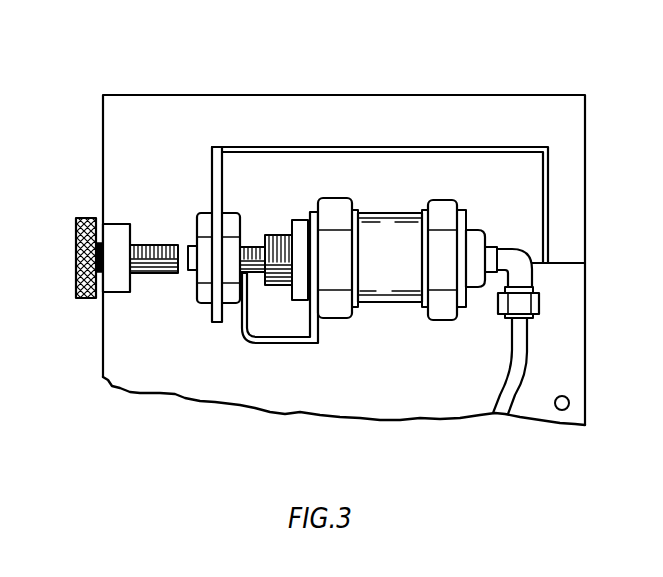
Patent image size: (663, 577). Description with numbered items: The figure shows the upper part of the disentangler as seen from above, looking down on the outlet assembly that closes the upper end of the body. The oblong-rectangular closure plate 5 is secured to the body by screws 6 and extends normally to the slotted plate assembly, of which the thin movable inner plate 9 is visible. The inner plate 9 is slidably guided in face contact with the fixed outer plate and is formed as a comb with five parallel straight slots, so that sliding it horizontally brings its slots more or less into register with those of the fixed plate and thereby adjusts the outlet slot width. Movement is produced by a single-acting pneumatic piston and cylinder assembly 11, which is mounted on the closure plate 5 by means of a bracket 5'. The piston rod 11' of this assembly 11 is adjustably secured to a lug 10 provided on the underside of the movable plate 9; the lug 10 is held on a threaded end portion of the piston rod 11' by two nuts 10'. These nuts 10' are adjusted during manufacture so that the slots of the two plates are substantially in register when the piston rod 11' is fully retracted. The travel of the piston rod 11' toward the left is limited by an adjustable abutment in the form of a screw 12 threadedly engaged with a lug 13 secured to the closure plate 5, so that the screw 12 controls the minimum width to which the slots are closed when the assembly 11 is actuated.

The closure plate 5 is at (365, 260).
The bracket 5' is at (280, 307).
The screws 6 is at (570, 403).
The inner plate 9 is at (313, 162).
The lug 10 is at (190, 185).
The nuts 10' is at (195, 291).
The piston and cylinder assembly 11 is at (428, 320).
The piston rod 11' is at (219, 229).
The knurled knob 12 is at (77, 285).
The plate 13 is at (117, 282).